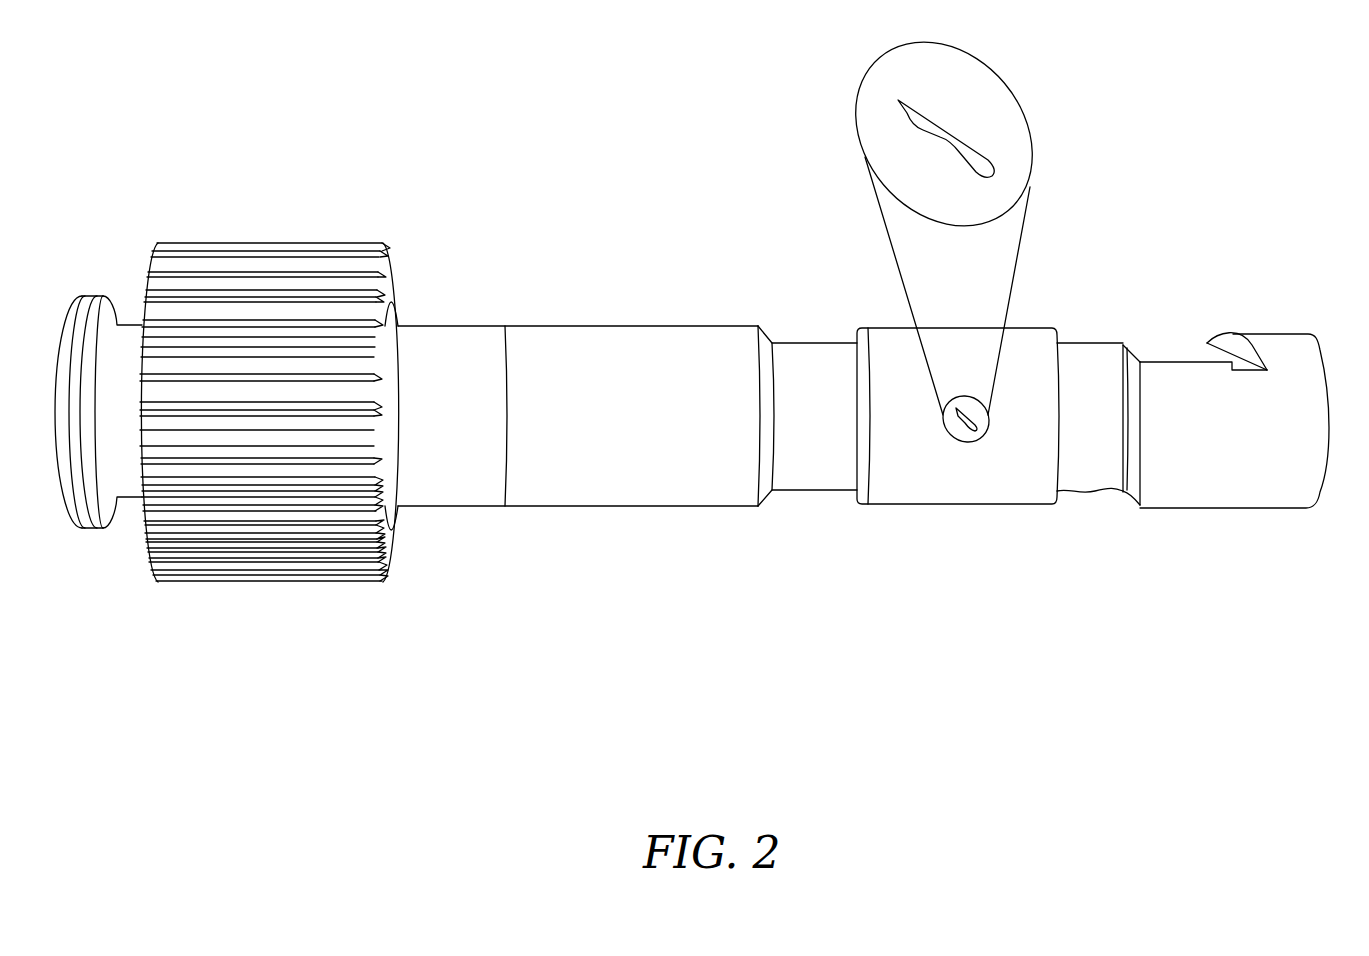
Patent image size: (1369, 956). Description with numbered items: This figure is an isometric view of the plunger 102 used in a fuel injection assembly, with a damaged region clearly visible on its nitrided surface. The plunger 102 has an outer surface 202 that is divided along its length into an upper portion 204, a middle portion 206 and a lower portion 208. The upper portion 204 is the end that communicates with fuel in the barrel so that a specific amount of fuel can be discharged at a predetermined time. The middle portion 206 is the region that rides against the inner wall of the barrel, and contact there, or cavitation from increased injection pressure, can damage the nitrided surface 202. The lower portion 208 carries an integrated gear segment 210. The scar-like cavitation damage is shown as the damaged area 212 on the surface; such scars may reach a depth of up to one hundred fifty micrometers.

The plunger 102 is at (1195, 648).
The outer surface 202 is at (613, 325).
The upper portion 204 is at (1192, 353).
The middle portion 206 is at (1020, 478).
The lower portion 208 is at (686, 348).
The integrated gear segment 210 is at (232, 280).
The damaged area 212 is at (1012, 100).